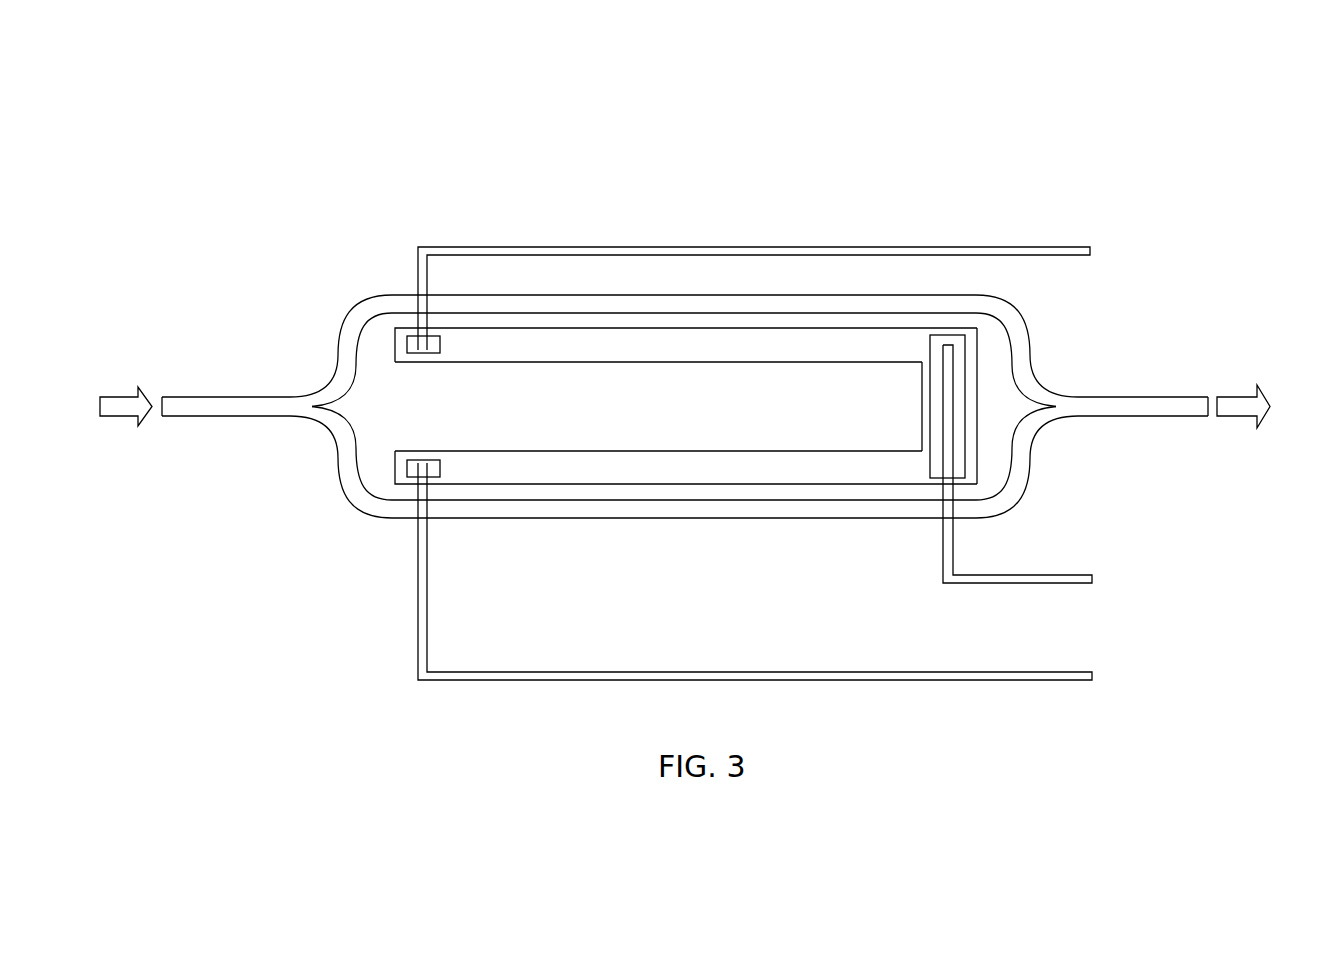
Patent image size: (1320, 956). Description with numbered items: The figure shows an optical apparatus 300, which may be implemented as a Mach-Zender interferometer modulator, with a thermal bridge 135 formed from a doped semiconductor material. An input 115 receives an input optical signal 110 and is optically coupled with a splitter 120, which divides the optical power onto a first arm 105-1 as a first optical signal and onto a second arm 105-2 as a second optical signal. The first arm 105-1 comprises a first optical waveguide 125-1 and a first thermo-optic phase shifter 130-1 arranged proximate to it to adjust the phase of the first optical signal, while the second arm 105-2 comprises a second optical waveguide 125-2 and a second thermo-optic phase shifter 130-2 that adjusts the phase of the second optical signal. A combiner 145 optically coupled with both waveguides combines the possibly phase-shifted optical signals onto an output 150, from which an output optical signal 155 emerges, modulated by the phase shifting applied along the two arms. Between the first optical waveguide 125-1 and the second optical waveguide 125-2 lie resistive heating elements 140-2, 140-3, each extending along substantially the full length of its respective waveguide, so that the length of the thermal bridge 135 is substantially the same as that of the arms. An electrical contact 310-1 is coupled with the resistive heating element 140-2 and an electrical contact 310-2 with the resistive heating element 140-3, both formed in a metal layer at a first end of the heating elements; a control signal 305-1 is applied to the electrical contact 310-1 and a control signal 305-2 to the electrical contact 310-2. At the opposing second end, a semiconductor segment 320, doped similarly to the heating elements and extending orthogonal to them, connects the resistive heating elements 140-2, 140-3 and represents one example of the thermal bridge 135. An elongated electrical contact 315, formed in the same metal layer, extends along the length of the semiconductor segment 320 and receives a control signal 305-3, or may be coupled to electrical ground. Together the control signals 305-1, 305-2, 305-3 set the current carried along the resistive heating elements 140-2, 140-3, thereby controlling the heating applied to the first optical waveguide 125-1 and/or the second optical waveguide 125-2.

The optical apparatus 300 is at (1053, 120).
The first arm 105-1 is at (575, 255).
The second arm 105-2 is at (569, 559).
The input optical signal 110 is at (112, 417).
The input 115 is at (212, 417).
The splitter 120 is at (315, 434).
The first optical waveguide 125-1 is at (530, 305).
The second optical waveguide 125-2 is at (523, 518).
The first thermo-optic phase shifter 130-1 is at (770, 372).
The second thermo-optic phase shifter 130-2 is at (765, 447).
The thermal bridge 135 is at (993, 366).
The resistive heating element 140-2 is at (565, 355).
The resistive heating element 140-3 is at (565, 462).
The combiner 145 is at (1047, 463).
The output 150 is at (1108, 402).
The output optical signal 155 is at (1237, 418).
The control signal 305-1 is at (1070, 247).
The control signal 305-2 is at (1068, 681).
The control signal 305-3 is at (1068, 584).
The electrical contact 310-1 is at (432, 351).
The electrical contact 310-2 is at (432, 464).
The electrical contact 315 is at (938, 415).
The semiconductor segment 320 is at (920, 385).